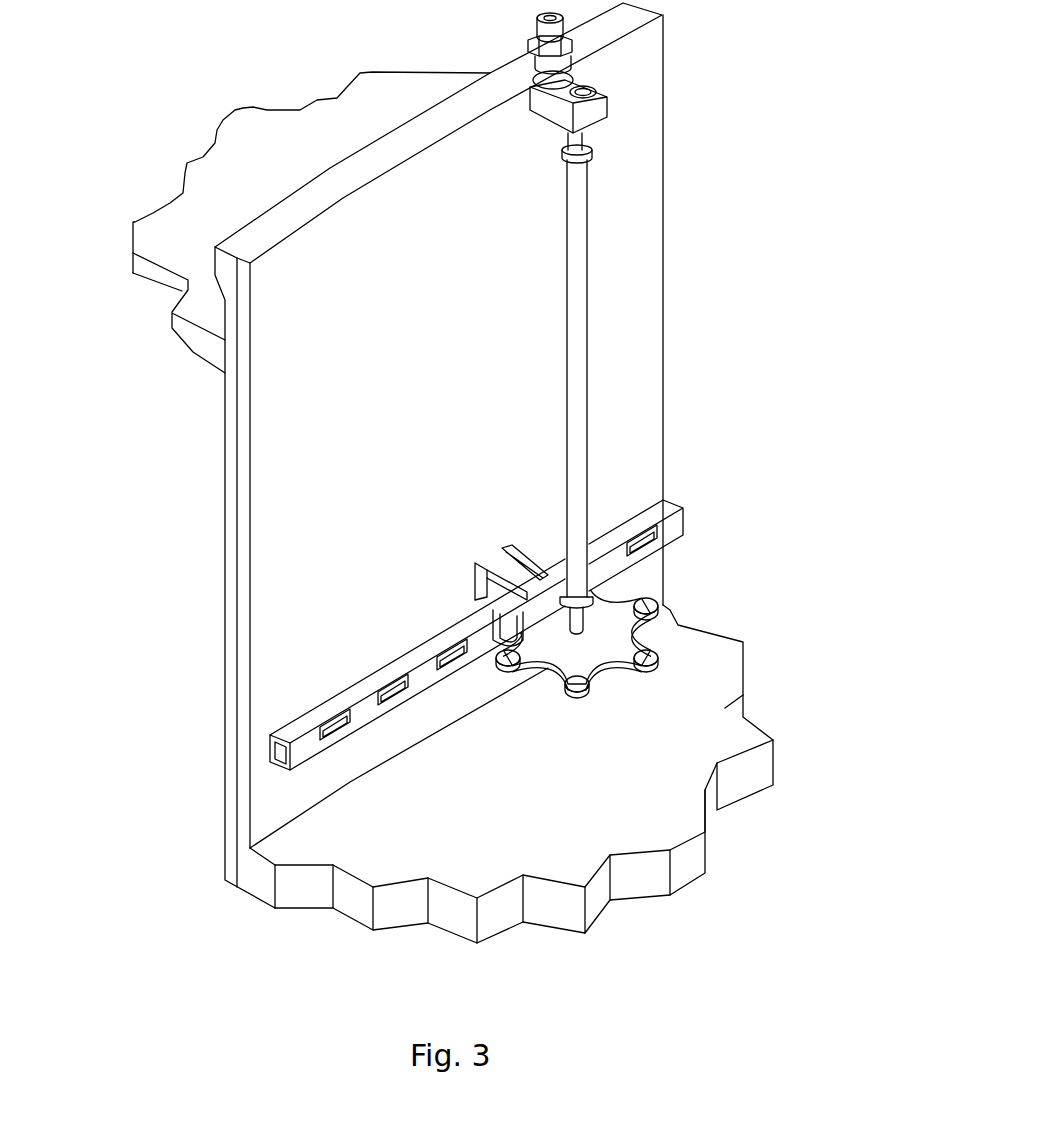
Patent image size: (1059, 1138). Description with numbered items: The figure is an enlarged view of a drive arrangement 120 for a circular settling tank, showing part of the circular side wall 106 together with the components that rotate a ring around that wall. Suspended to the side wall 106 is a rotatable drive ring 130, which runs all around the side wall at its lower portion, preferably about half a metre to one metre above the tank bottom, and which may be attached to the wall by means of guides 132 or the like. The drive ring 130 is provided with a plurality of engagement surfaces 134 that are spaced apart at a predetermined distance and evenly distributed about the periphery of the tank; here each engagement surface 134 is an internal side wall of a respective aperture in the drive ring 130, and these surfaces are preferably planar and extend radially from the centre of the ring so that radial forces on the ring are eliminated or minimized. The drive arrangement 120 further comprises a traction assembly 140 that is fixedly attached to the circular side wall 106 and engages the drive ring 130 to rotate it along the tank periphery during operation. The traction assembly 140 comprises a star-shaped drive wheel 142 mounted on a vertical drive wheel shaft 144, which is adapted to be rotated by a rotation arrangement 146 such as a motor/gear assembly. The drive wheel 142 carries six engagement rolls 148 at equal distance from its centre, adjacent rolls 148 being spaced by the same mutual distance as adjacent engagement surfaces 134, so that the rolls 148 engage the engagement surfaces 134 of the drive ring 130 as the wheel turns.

The circular side wall 106 is at (667, 151).
The drive arrangement 120 is at (752, 244).
The drive ring 130 is at (690, 497).
The guides 132 is at (471, 562).
The engagement surfaces 134 is at (351, 728).
The traction assembly 140 is at (617, 702).
The drive wheel 142 is at (612, 600).
The drive wheel shaft 144 is at (558, 398).
The rotation arrangement 146 is at (614, 81).
The engagement rolls 148 is at (662, 654).